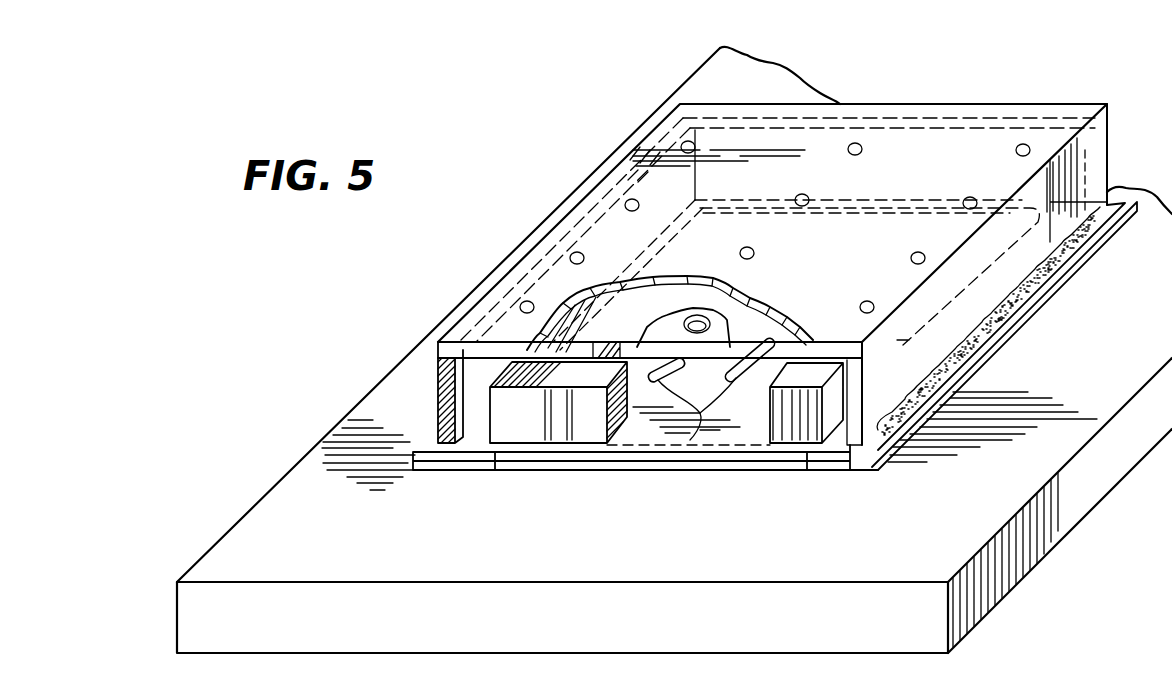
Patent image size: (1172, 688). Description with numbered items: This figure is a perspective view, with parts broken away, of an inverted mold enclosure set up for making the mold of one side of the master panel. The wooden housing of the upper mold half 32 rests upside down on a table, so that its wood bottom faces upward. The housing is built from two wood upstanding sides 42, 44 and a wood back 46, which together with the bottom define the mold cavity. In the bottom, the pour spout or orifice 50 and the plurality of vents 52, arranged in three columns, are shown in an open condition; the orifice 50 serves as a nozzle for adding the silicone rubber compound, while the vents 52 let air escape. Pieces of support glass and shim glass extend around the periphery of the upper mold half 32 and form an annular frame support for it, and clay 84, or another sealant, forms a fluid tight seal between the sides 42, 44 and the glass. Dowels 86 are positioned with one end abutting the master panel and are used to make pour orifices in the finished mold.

The upper mold half 32 is at (892, 105).
The upstanding side 42 is at (856, 457).
The upstanding side 44 is at (438, 398).
The back 46 is at (1107, 104).
The orifice 50 is at (710, 320).
The vents 52 is at (575, 256).
The clay 84 is at (1057, 261).
The dowels 86 is at (646, 328).